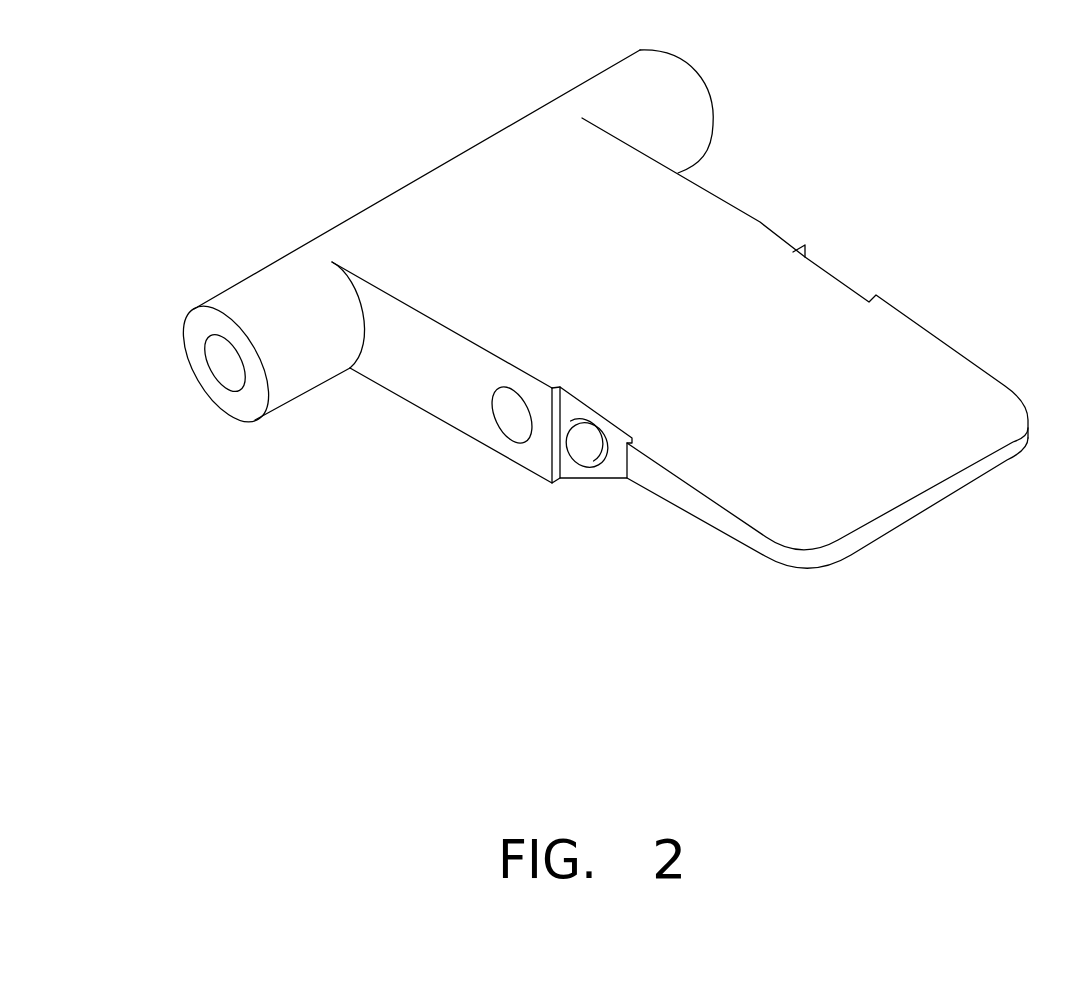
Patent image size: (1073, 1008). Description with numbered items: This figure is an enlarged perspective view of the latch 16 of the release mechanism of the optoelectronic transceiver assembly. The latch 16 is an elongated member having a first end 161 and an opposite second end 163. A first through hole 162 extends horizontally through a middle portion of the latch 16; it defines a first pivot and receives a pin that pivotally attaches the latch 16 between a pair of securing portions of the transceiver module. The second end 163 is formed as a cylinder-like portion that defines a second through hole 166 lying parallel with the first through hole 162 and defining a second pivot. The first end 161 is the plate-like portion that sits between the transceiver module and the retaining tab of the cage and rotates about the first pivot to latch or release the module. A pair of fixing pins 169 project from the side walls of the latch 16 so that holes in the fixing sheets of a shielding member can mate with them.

The latch 16 is at (579, 350).
The first end 161 is at (815, 490).
The first through hole 162 is at (513, 420).
The second end 163 is at (421, 282).
The second through hole 166 is at (230, 362).
The fixing pin 169 is at (592, 455).